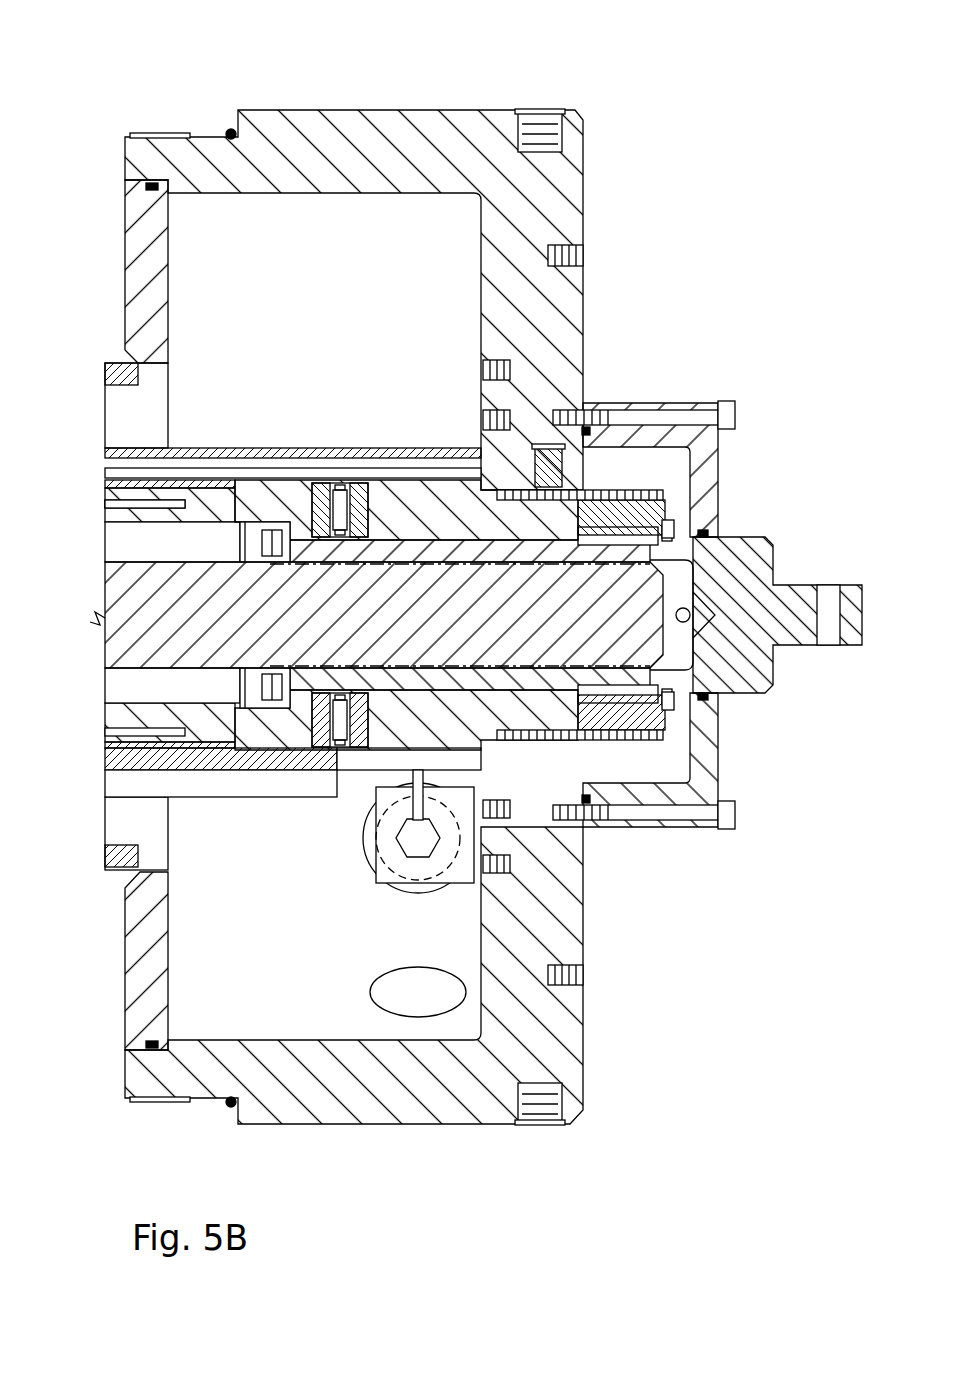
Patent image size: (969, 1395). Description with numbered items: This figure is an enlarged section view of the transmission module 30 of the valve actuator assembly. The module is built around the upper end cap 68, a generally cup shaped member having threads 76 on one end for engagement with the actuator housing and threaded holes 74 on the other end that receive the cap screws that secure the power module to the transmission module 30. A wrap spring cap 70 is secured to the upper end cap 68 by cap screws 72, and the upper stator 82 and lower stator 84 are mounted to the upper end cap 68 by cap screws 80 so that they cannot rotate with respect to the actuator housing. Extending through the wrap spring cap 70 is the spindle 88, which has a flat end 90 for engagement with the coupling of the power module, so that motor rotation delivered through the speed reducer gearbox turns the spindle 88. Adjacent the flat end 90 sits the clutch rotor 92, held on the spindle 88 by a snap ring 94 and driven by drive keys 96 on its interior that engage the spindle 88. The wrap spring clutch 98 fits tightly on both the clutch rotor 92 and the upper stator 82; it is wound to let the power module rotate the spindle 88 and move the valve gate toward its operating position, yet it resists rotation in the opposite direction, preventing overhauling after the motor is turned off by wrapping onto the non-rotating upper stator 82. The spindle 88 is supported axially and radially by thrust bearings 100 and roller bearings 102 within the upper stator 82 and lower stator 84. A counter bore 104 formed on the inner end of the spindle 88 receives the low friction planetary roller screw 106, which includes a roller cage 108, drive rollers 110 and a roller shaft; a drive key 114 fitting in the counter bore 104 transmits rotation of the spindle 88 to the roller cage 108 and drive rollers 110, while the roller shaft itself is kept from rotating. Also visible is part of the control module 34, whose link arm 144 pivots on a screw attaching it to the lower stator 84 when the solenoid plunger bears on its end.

The transmission module 30 is at (272, 88).
The control module 34 is at (377, 881).
The upper end cap 68 is at (585, 150).
The wrap spring cap 70 is at (722, 765).
The cap screws 72 is at (738, 817).
The threaded holes 74 is at (583, 258).
The threads 76 is at (183, 133).
The cap screws 80 is at (572, 458).
The upper stator 82 is at (345, 448).
The lower stator 84 is at (240, 448).
The spindle 88 is at (460, 530).
The flat end 90 is at (782, 588).
The clutch rotor 92 is at (665, 503).
The snap ring 94 is at (692, 695).
The drive keys 96 is at (645, 530).
The wrap spring clutch 98 is at (612, 735).
The thrust bearings 100 is at (342, 723).
The roller bearings 102 is at (283, 745).
The counter bore 104 is at (285, 690).
The planetary roller screw 106 is at (222, 575).
The roller cage 108 is at (130, 722).
The drive rollers 110 is at (115, 540).
The drive key 114 is at (113, 506).
The link arm 144 is at (105, 778).